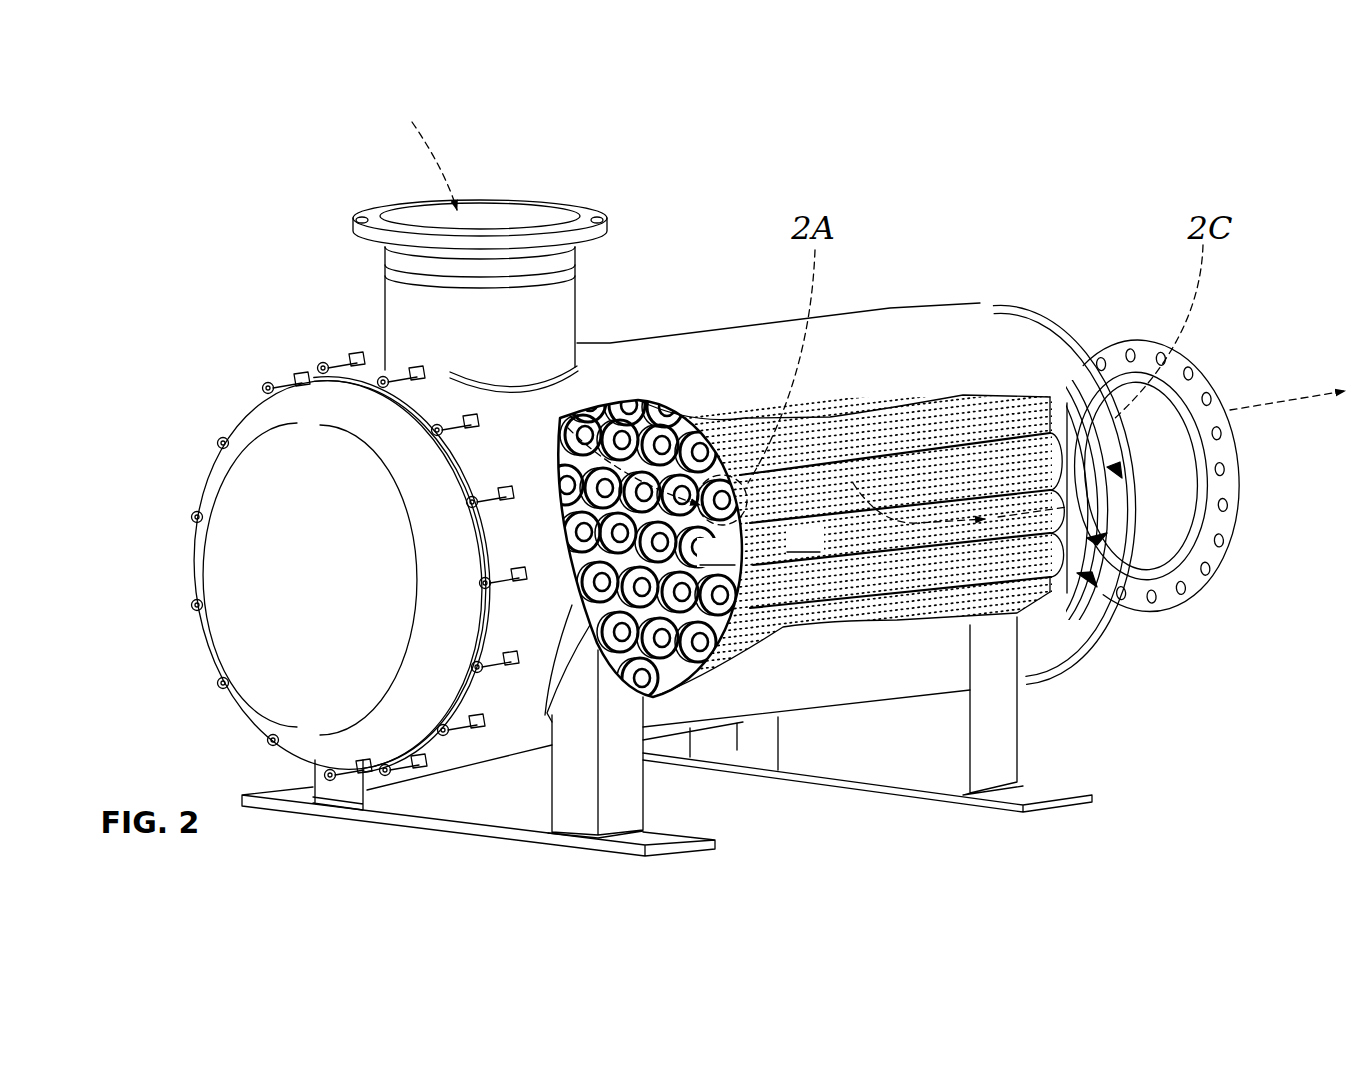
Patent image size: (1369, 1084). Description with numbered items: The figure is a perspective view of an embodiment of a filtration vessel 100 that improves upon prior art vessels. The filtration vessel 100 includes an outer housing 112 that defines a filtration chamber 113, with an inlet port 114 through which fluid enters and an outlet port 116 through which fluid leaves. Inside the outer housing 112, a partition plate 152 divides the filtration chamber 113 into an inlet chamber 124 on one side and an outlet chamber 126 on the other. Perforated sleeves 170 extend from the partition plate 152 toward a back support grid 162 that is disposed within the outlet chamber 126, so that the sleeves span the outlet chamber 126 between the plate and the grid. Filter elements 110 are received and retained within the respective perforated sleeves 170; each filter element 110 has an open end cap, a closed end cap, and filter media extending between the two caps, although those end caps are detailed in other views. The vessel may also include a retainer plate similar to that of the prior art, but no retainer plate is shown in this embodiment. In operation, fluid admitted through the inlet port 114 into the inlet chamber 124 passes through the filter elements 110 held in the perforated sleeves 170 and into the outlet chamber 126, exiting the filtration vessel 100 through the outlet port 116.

The filtration vessel 100 is at (190, 195).
The filter elements 110 is at (632, 400).
The outer housing 112 is at (266, 421).
The filtration chamber 113 is at (1105, 583).
The inlet port 114 is at (362, 212).
The outlet port 116 is at (1210, 547).
The inlet chamber 124 is at (672, 682).
The outlet chamber 126 is at (1150, 567).
The partition plate 152 is at (700, 418).
The back support grid 162 is at (1100, 502).
The perforated sleeves 170 is at (1125, 440).